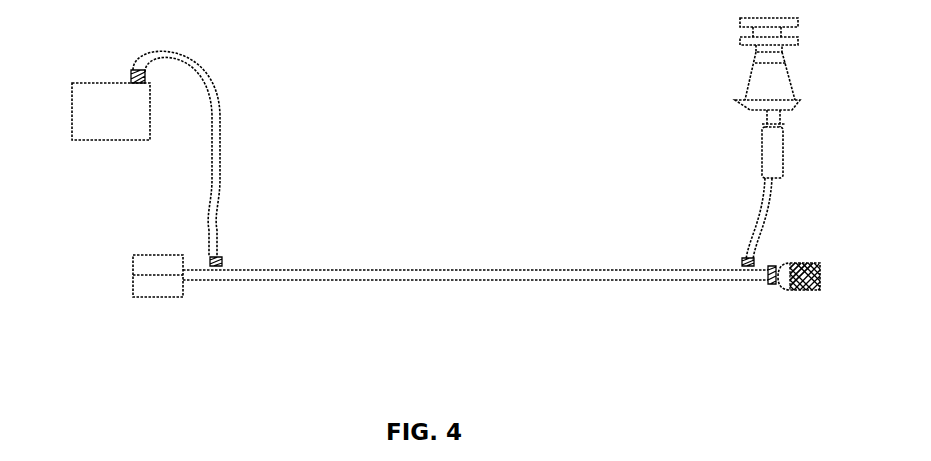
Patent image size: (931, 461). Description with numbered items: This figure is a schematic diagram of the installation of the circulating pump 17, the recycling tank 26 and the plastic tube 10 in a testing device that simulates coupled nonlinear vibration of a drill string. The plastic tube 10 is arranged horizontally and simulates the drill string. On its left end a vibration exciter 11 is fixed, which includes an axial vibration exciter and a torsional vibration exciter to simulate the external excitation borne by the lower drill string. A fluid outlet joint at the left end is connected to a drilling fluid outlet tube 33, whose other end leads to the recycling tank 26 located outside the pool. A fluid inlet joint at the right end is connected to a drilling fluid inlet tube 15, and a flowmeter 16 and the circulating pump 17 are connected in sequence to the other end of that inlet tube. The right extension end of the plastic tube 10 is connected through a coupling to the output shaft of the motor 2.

The motor 2 is at (795, 284).
The plastic tube 10 is at (550, 275).
The vibration exciter 11 is at (160, 292).
The drilling fluid inlet tube 15 is at (770, 190).
The flowmeter 16 is at (773, 143).
The circulating pump 17 is at (772, 83).
The recycling tank 26 is at (88, 100).
The drilling fluid outlet tube 33 is at (220, 174).